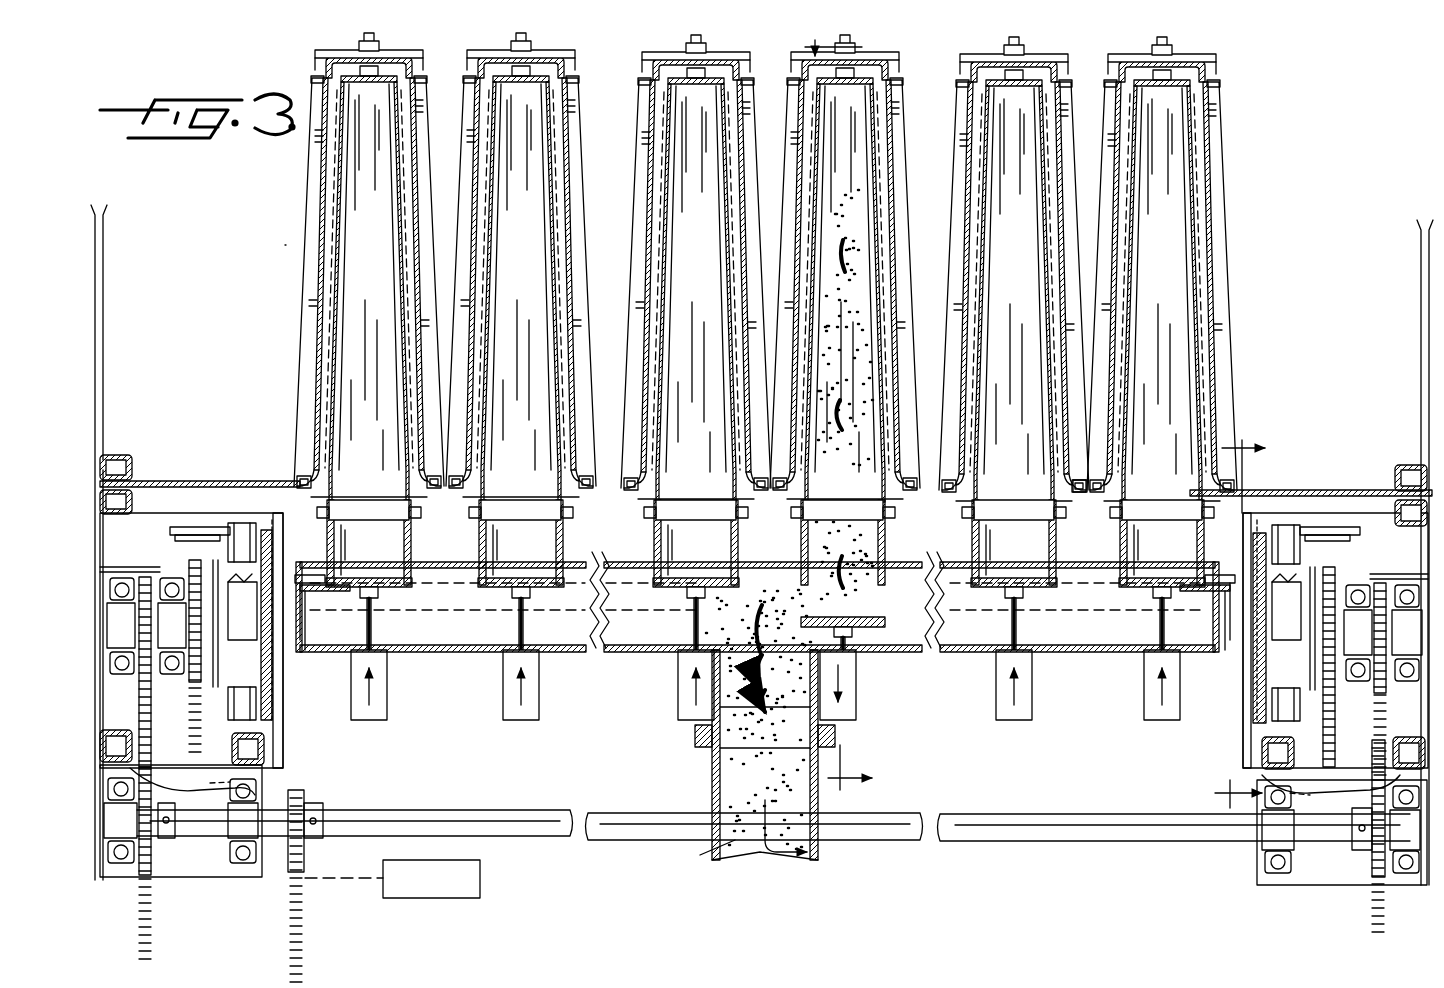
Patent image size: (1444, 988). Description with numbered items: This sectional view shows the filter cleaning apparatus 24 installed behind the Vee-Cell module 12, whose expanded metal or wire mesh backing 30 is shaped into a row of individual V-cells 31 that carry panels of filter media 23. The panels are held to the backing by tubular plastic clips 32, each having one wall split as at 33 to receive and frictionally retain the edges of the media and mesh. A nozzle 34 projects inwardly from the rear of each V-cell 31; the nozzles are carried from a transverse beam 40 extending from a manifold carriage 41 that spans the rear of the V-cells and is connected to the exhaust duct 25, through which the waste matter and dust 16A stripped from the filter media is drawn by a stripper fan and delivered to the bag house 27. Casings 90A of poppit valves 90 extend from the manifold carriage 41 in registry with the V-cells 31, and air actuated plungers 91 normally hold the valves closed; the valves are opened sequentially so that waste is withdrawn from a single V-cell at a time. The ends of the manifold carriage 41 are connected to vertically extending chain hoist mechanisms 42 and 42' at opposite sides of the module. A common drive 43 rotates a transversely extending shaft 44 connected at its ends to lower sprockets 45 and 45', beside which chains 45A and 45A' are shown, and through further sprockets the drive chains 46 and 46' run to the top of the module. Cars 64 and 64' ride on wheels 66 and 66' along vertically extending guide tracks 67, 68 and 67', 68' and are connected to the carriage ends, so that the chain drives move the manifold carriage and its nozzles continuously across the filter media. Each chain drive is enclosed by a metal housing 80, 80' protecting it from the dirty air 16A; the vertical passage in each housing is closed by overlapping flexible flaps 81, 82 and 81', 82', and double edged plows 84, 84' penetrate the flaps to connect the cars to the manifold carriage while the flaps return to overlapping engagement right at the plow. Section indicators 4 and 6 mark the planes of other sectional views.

The Vee-Cell module 12 is at (285, 245).
The filter media 23 is at (1182, 185).
The expanded metal or wire mesh backing 30 is at (962, 110).
The V-cell 31 is at (1078, 135).
The nozzle 34 is at (660, 170).
The tubular plastic clip 32 is at (1085, 495).
The split wall 33 is at (920, 500).
The waste matter and dust 16A is at (848, 255).
The transverse beam 40 is at (1075, 645).
The manifold carriage 41 is at (858, 672).
The exhaust duct 25 is at (712, 855).
The bag house 27 is at (869, 854).
The filter cleaning apparatus 24 is at (640, 682).
The transversely extending shaft 44 is at (480, 812).
The drive 43 is at (482, 878).
The lower sprocket 45 is at (1341, 836).
The lower sprocket 45' is at (213, 880).
The chain 45A is at (1362, 731).
The chain 45A' is at (159, 745).
The drive chain 46 is at (1380, 548).
The drive chain 46' is at (138, 546).
The chain hoist mechanism 42 is at (1335, 576).
The chain hoist mechanism 42' is at (280, 559).
The car 64 is at (1207, 653).
The car 64' is at (306, 645).
The wheel 66 is at (1307, 590).
The roller 66' is at (218, 578).
The guide track 67 is at (1343, 752).
The guide block 67' is at (182, 747).
The guide track 68 is at (1353, 478).
The bracket 68' is at (177, 465).
The metal housing 80 is at (1255, 789).
The link 80' is at (252, 778).
The flexible flap 81 is at (1207, 657).
The arm 81' is at (325, 643).
The flexible flap 82 is at (1162, 629).
The actuator 82' is at (359, 626).
The double edged plow 84 is at (1170, 617).
The rod 84' is at (361, 617).
The poppit valve 90 is at (500, 690).
The valve casing 90A is at (545, 550).
The air actuated plunger 91 is at (524, 605).
The section line 4 is at (826, 424).
The section line 6 is at (1225, 612).